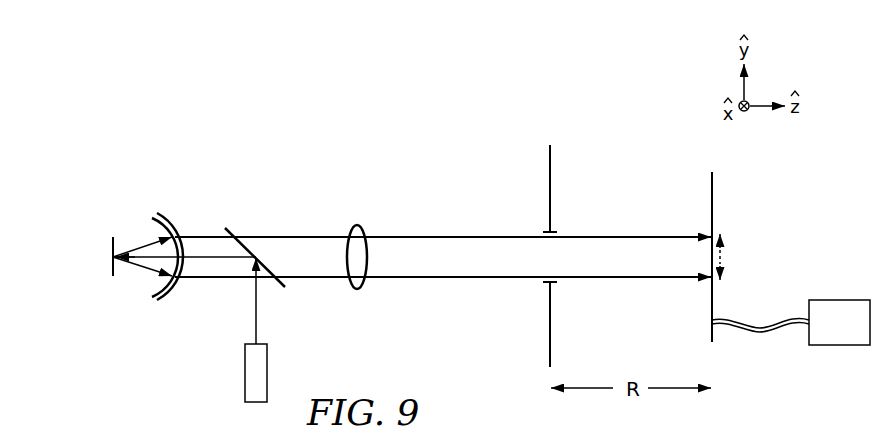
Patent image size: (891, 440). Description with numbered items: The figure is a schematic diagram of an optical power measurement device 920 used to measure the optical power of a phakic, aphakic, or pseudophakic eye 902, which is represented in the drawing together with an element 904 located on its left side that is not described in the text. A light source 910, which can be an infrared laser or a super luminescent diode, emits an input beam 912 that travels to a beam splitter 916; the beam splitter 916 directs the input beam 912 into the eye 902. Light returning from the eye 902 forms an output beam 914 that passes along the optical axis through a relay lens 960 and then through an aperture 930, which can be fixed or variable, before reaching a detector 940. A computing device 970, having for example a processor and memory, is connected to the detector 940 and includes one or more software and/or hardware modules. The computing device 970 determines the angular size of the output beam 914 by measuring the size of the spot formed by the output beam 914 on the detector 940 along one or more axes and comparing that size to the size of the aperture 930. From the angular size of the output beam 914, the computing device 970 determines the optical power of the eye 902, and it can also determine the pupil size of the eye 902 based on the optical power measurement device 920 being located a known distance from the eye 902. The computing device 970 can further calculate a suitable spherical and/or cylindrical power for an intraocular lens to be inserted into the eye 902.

The eye 902 is at (168, 222).
The light source 904 is at (112, 240).
The light source 910 is at (245, 372).
The input beam 912 is at (255, 313).
The output beam 914 is at (475, 277).
The beam splitter 916 is at (248, 246).
The optical power measurement device 920 is at (289, 323).
The aperture 930 is at (552, 168).
The detector 940 is at (713, 190).
The relay lens 960 is at (370, 231).
The computing device 970 is at (791, 322).